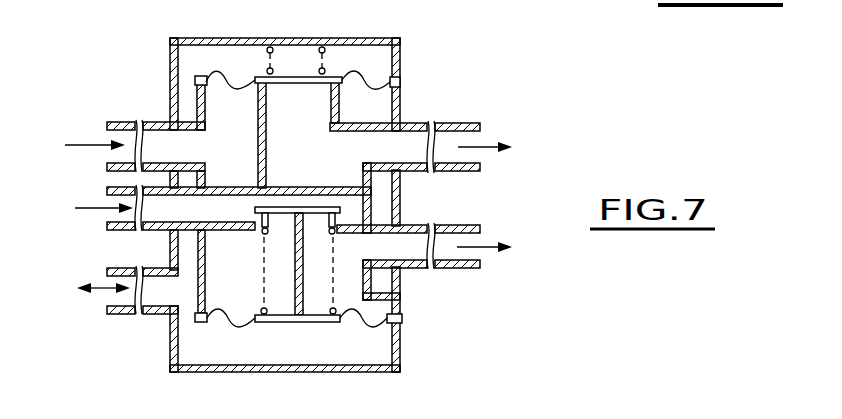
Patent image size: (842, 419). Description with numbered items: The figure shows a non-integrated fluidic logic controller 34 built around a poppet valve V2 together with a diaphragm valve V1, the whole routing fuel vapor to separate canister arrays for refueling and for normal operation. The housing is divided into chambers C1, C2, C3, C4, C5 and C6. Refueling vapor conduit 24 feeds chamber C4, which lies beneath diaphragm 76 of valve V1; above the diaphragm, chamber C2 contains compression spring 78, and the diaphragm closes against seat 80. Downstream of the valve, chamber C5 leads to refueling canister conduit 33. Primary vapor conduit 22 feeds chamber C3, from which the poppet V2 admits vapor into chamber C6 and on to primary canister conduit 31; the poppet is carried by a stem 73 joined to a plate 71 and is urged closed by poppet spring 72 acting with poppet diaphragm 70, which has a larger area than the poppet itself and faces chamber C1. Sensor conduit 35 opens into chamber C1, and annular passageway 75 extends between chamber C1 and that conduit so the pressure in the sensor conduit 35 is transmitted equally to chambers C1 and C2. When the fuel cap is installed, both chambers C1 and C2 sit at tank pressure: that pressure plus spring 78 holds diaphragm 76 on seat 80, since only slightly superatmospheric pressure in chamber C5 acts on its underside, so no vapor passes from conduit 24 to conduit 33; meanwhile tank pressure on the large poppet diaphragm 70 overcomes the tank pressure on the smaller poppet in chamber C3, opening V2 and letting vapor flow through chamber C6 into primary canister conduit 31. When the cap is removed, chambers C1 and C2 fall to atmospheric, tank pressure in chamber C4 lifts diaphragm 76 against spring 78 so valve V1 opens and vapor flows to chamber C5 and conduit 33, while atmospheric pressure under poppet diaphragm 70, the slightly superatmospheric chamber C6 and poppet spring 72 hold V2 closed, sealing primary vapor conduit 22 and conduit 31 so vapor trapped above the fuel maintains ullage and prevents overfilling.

The valve housing 34 is at (74, 66).
The annular passageway 75 is at (188, 110).
The chamber C2 is at (195, 53).
The compression spring 78 is at (270, 46).
The valve V1 is at (292, 74).
The diaphragm 76 is at (337, 76).
The refueling vapor conduit 24 is at (108, 122).
The primary vapor conduit 22 is at (109, 161).
The refueling canister conduit 33 is at (453, 126).
The primary canister conduit 31 is at (463, 227).
The chamber C3 is at (175, 210).
The sensor conduit 35 is at (122, 314).
The chamber C4 is at (248, 150).
The chamber C5 is at (312, 149).
The seat 80 is at (322, 99).
The valve plate 71 is at (285, 207).
The poppet valve V2 is at (308, 250).
The chamber C6 is at (248, 272).
The chamber C1 is at (285, 351).
The valve stem 73 is at (296, 277).
The poppet spring 72 is at (323, 322).
The poppet diaphragm 70 is at (333, 325).